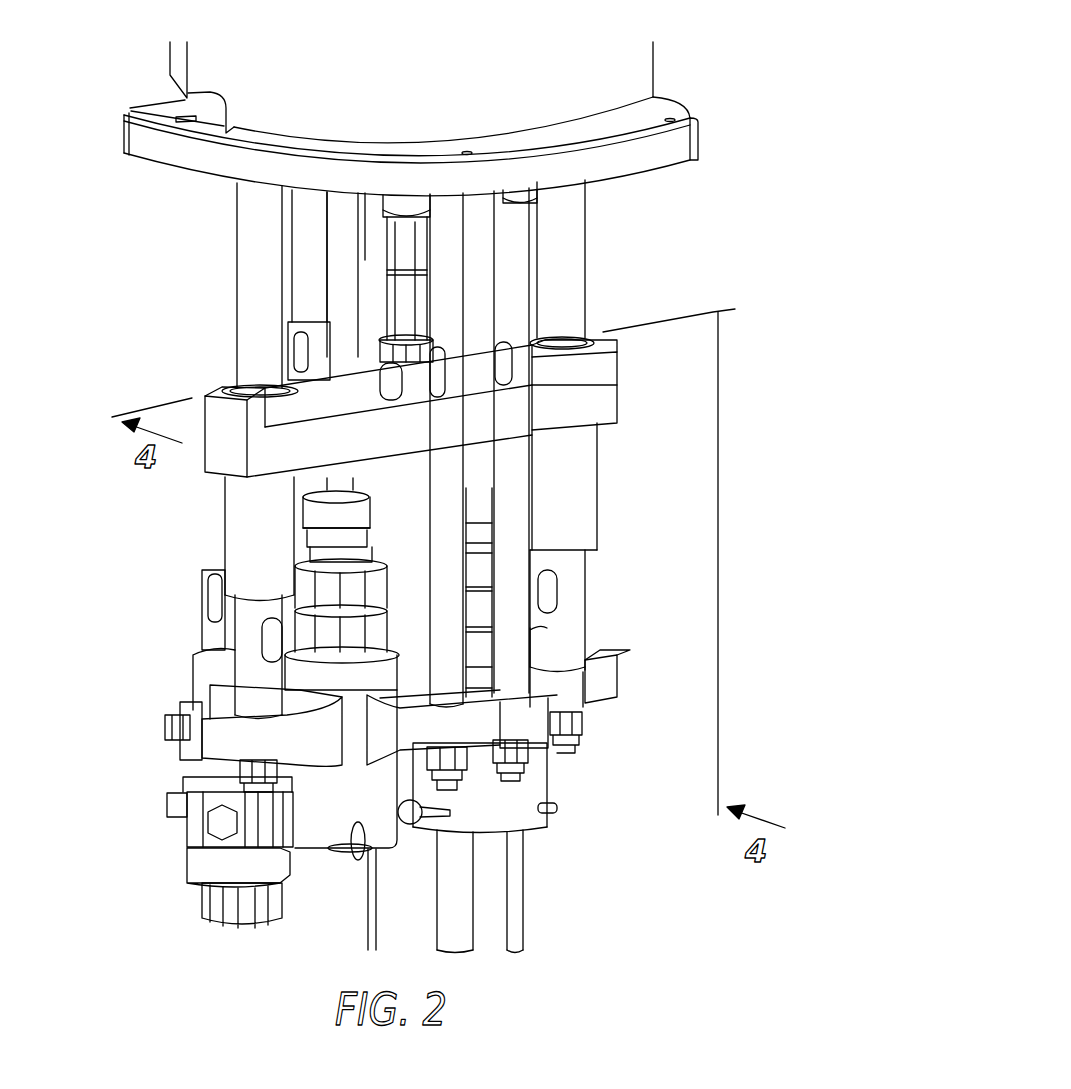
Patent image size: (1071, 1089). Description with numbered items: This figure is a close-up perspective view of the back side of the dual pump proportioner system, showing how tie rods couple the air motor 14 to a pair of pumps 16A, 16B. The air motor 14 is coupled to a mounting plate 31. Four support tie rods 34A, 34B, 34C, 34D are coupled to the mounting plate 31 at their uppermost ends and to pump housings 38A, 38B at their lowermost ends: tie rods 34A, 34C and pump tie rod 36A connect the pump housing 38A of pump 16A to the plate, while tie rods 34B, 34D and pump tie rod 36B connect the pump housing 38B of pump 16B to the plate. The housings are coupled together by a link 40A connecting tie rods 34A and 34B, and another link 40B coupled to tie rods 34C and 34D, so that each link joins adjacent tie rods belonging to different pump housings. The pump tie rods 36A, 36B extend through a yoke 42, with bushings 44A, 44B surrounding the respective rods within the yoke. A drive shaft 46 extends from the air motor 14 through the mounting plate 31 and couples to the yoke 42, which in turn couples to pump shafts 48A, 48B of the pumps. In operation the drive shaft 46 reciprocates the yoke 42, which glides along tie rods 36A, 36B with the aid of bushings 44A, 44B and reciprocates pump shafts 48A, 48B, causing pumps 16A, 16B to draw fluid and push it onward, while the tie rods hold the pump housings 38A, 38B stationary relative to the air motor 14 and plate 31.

The air motor 14 is at (645, 77).
The mounting plate 31 is at (668, 153).
The tie rod 34A is at (298, 290).
The tie rod 34B is at (362, 257).
The tie rod 34C is at (447, 478).
The tie rod 34D is at (517, 268).
The pump tie rod 36A is at (250, 345).
The pump tie rod 36B is at (583, 311).
The yoke 42 is at (192, 398).
The bushing 44A is at (233, 515).
The bushing 44B is at (593, 439).
The drive shaft 46 is at (408, 202).
The pump shaft 48A is at (340, 523).
The pump shaft 48B is at (486, 497).
The pump 16A is at (202, 677).
The pump 16B is at (550, 638).
The link 40A is at (253, 725).
The link 40B is at (483, 693).
The pump housing 38A is at (313, 830).
The pump housing 38B is at (533, 787).